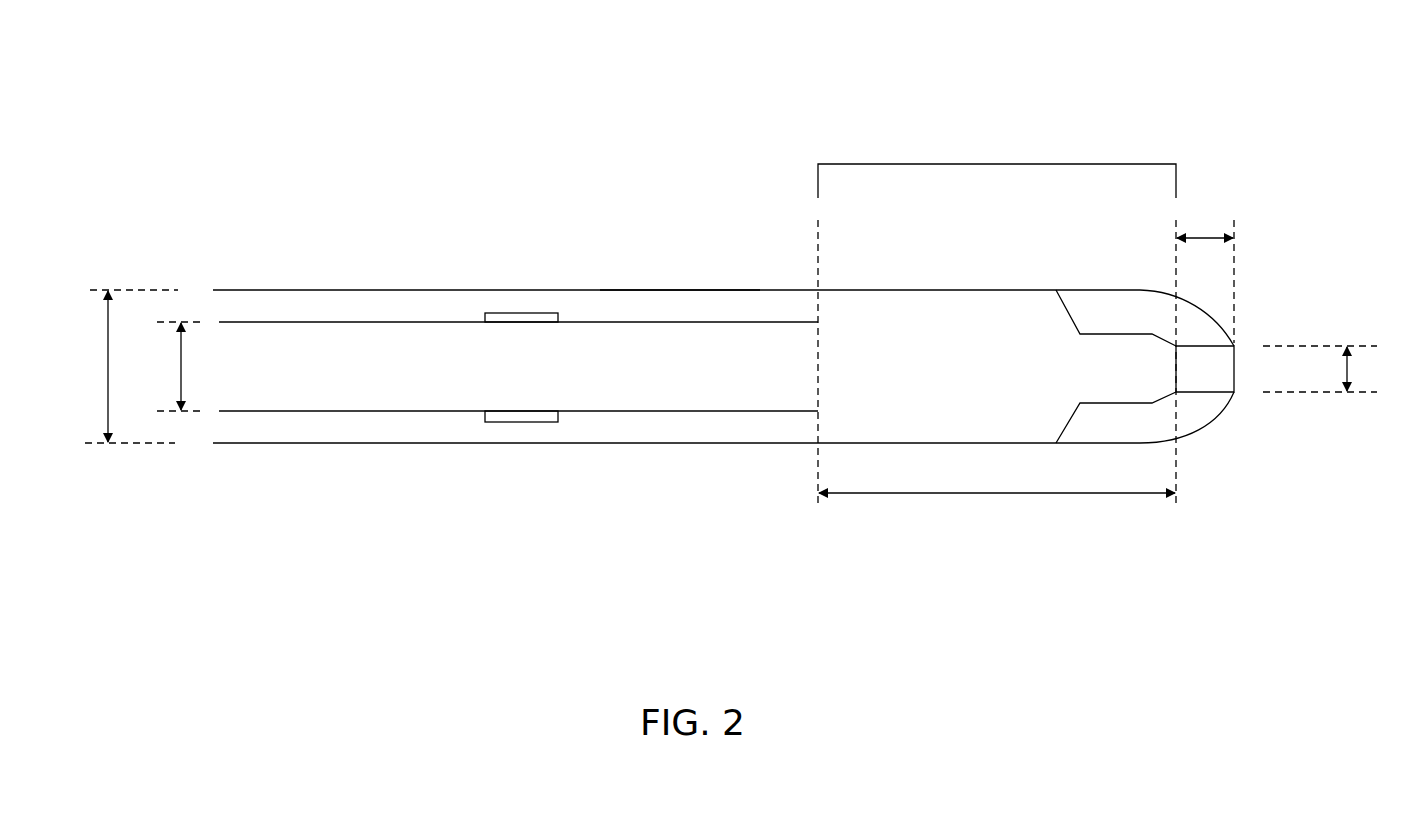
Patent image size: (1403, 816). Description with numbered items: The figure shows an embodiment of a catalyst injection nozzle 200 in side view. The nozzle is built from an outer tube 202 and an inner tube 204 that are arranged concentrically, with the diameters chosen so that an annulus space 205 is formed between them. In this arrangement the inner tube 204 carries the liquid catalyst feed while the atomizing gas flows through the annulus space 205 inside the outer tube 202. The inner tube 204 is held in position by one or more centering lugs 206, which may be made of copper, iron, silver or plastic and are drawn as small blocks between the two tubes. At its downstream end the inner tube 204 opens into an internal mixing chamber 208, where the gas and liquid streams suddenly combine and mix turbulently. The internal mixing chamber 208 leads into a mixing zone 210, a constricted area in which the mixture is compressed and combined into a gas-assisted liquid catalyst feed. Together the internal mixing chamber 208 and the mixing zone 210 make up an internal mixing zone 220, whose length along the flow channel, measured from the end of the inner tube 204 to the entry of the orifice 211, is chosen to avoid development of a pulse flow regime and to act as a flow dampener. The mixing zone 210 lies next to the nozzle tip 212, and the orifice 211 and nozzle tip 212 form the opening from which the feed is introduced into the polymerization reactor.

The catalyst injection nozzle 200 is at (288, 140).
The outer tube 202 is at (472, 290).
The inner tube 204 is at (361, 411).
The annulus space 205 is at (661, 305).
The centering lug 206 is at (522, 422).
The internal mixing chamber 208 is at (937, 366).
The mixing zone 210 is at (1145, 366).
The orifice 211 is at (1210, 373).
The nozzle tip 212 is at (1237, 363).
The internal mixing zone 220 is at (997, 318).